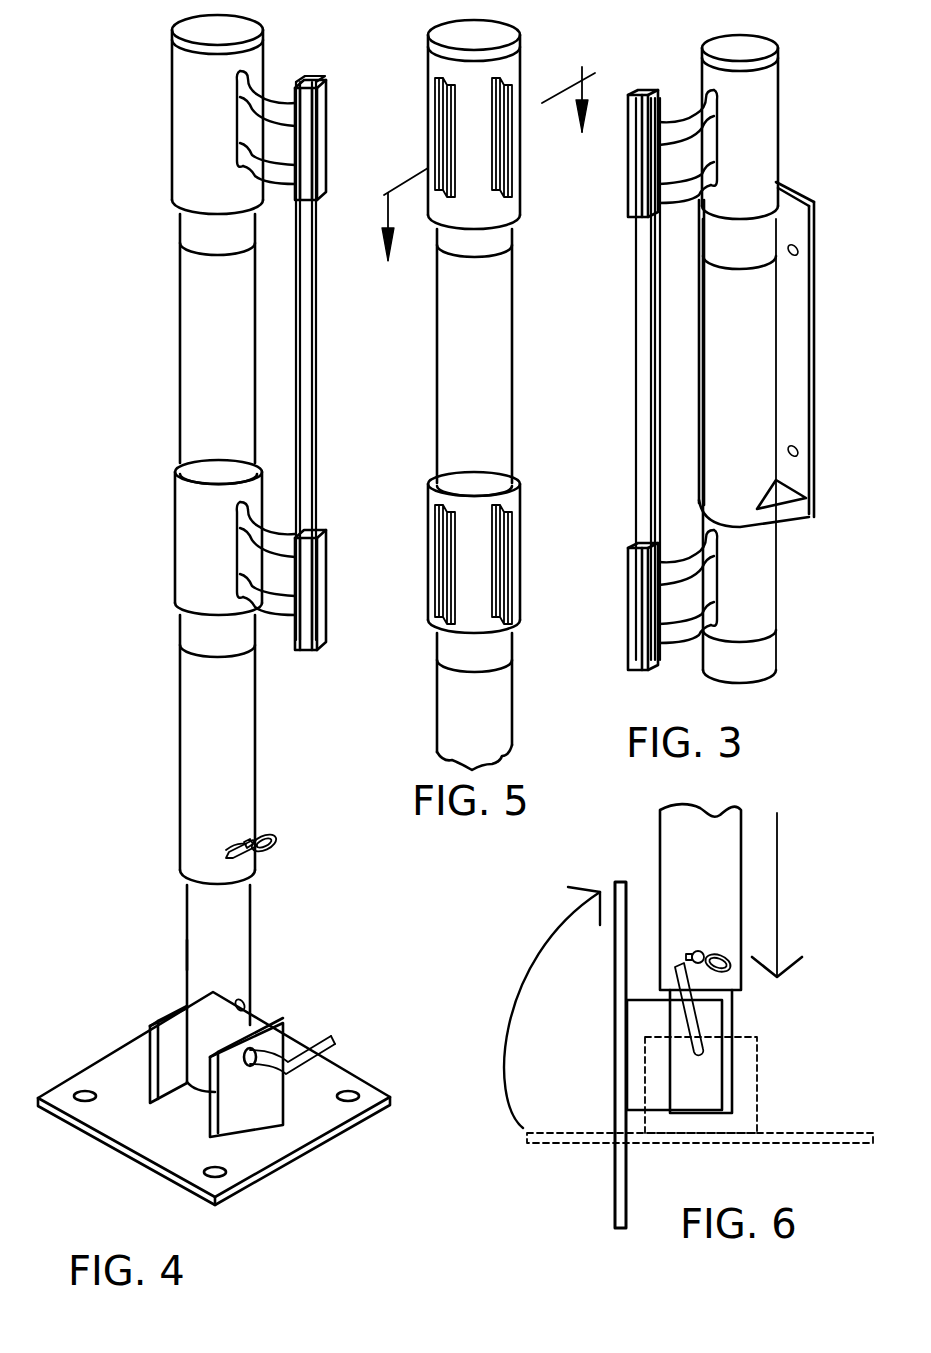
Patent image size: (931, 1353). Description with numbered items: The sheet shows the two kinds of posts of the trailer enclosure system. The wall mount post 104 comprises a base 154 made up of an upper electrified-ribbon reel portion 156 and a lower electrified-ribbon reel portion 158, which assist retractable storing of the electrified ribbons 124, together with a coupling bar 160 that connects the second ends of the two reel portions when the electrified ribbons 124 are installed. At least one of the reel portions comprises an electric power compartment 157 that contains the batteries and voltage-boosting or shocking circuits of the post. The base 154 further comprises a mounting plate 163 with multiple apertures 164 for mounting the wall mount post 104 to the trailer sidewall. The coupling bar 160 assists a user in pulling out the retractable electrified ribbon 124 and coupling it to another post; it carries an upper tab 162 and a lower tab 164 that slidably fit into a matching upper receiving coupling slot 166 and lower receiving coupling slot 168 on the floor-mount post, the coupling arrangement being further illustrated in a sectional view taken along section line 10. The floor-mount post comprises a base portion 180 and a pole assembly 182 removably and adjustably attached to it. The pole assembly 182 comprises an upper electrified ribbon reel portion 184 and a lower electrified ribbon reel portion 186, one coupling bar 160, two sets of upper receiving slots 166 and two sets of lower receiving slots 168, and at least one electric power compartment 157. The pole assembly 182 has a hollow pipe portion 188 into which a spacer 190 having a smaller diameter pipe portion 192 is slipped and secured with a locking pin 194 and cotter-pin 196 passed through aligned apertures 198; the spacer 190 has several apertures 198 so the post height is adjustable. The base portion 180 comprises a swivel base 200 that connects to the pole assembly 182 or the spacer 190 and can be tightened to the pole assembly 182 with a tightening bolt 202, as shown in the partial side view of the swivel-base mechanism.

In FIG. 5, the section line 10 is at (478, 161).
In FIG. 3, the wall mount post 104 is at (808, 707).
In FIG. 3, the electrified ribbon 124 is at (698, 116).
In FIG. 3, the base 154 is at (793, 350).
In FIG. 3, the upper electrified-ribbon reel portion 156 is at (757, 97).
In FIG. 4, the electric power compartment 157 is at (195, 235).
In FIG. 5, the electric power compartment 157 is at (502, 235).
In FIG. 3, the electric power compartment 157 is at (762, 653).
In FIG. 3, the lower electrified-ribbon reel portion 158 is at (760, 598).
In FIG. 4, the coupling bar 160 is at (308, 333).
In FIG. 3, the coupling bar 160 is at (643, 336).
In FIG. 4, the upper tab 162 is at (320, 129).
In FIG. 3, the upper tab 162 is at (637, 156).
In FIG. 3, the mounting plate 163 is at (810, 355).
In FIG. 4, the aperture / lower tab 164 is at (317, 586).
In FIG. 3, the aperture / lower tab 164 is at (638, 606).
In FIG. 5, the upper receiving coupling slot 166 is at (437, 96).
In FIG. 5, the lower receiving coupling slot 168 is at (433, 506).
In FIG. 4, the base portion 180 is at (227, 1097).
In FIG. 4, the pole assembly 182 is at (199, 749).
In FIG. 6, the pole assembly 182 is at (717, 842).
In FIG. 4, the upper electrified ribbon reel portion 184 is at (178, 120).
In FIG. 4, the lower electrified ribbon reel portion 186 is at (180, 552).
In FIG. 4, the hollow pipe portion 188 is at (257, 740).
In FIG. 4, the spacer 190 is at (278, 939).
In FIG. 6, the spacer 190 is at (728, 1004).
In FIG. 4, the smaller diameter pipe portion 192 is at (187, 954).
In FIG. 4, the locking pin 194 is at (253, 849).
In FIG. 6, the locking pin 194 is at (724, 947).
In FIG. 4, the cotter-pin 196 is at (274, 837).
In FIG. 6, the cotter-pin 196 is at (730, 968).
In FIG. 4, the aperture 198 is at (227, 840).
In FIG. 4, the swivel base 200 is at (301, 1130).
In FIG. 6, the swivel base 200 is at (804, 1133).
In FIG. 4, the tightening bolt 202 is at (335, 1041).
In FIG. 6, the tightening bolt 202 is at (690, 1017).